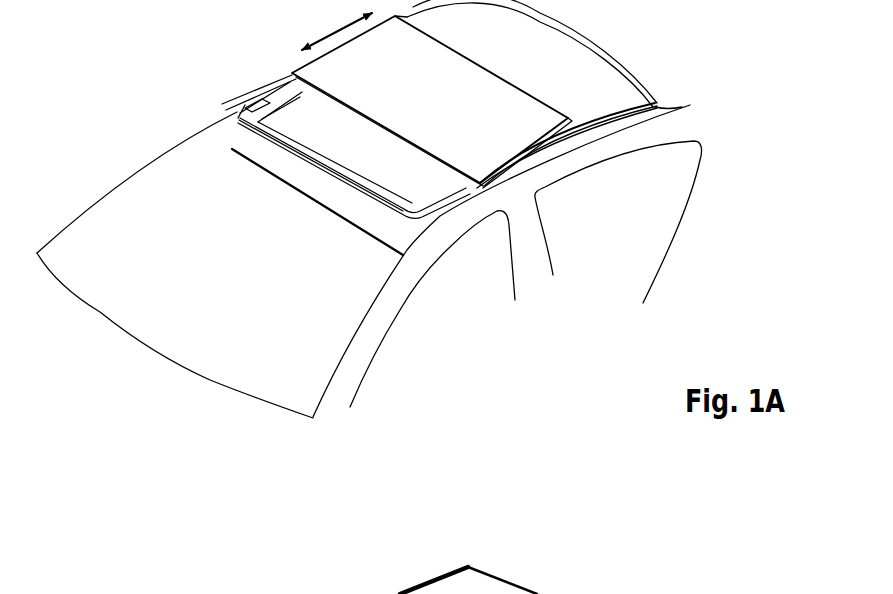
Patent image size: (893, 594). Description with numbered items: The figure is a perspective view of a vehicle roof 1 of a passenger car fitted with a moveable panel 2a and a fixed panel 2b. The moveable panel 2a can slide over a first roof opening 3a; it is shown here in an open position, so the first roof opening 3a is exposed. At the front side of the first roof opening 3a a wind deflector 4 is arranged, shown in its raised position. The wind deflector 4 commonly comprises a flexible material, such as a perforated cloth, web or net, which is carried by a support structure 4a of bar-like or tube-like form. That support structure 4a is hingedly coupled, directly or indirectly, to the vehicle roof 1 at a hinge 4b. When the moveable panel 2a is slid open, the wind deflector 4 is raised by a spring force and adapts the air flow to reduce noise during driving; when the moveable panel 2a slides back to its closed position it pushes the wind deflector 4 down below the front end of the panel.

The vehicle roof 1 is at (647, 137).
The moveable panel 2a is at (441, 96).
The fixed panel 2b is at (554, 65).
The first roof opening 3a is at (302, 120).
The wind deflector 4 is at (255, 143).
The support structure 4a is at (383, 201).
The hinge 4b is at (255, 93).